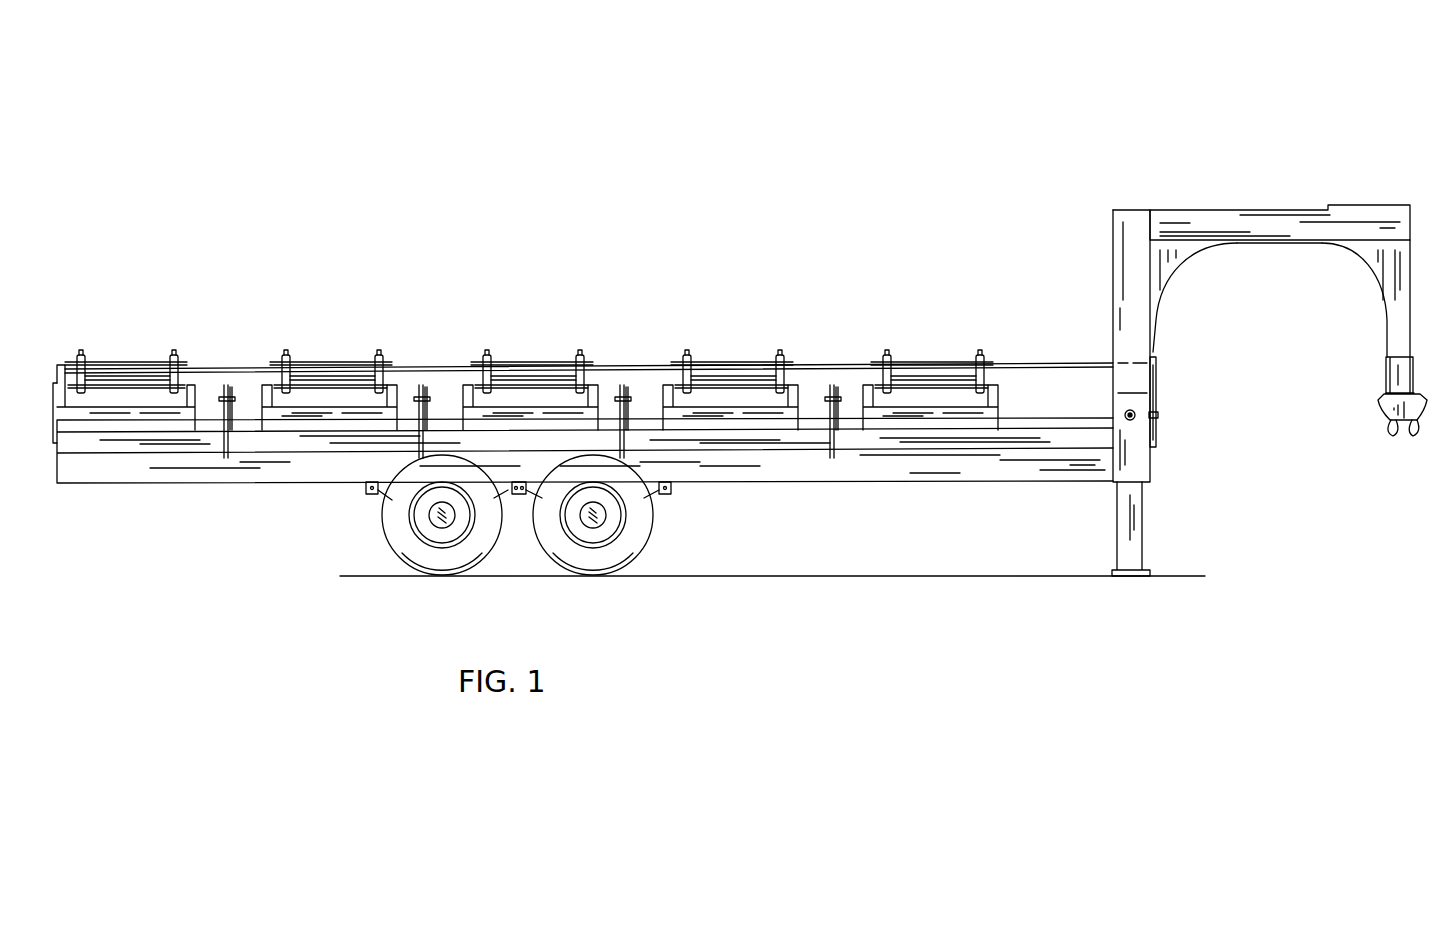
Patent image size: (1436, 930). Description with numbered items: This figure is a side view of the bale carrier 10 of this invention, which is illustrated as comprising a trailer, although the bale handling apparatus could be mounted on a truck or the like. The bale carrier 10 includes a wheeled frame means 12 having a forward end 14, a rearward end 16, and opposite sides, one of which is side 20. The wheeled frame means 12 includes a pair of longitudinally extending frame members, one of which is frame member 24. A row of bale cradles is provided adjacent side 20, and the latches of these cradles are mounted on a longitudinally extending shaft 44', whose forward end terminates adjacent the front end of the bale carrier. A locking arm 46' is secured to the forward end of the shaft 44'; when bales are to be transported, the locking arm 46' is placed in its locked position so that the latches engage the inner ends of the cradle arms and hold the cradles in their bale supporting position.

The bale carrier 10 is at (734, 340).
The wheeled frame means 12 is at (601, 507).
The forward end 14 is at (1310, 195).
The rearward end 16 is at (43, 385).
The side 20 is at (518, 344).
The frame member 24 is at (947, 492).
The shaft 44' is at (589, 332).
The locking arm 46' is at (1194, 402).